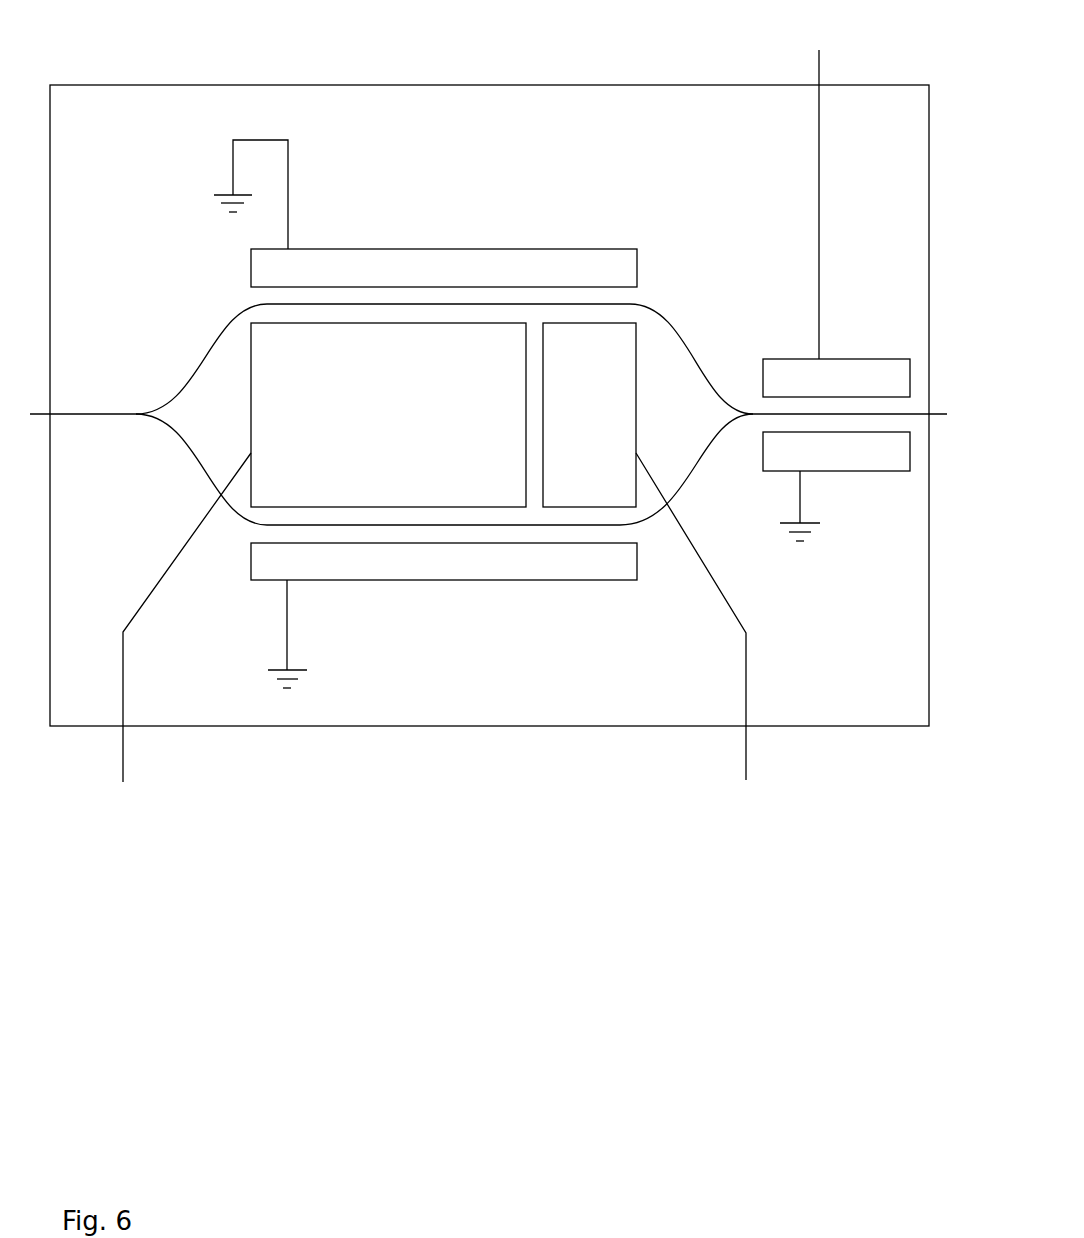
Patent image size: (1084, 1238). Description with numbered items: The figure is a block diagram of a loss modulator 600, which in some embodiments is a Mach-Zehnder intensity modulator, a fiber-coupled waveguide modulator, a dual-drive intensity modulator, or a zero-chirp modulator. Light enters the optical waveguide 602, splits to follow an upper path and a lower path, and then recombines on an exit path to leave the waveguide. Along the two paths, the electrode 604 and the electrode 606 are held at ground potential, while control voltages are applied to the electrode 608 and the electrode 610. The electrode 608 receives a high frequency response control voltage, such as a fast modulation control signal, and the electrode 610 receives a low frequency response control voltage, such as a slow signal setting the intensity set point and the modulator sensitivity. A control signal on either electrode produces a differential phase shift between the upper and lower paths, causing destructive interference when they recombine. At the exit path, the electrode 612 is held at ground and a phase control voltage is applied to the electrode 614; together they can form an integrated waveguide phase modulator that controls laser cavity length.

The loss modulator 600 is at (533, 726).
The optical waveguide 602 is at (118, 412).
The electrode 604 is at (519, 250).
The electrode 606 is at (500, 580).
The electrode 608 is at (251, 372).
The electrode 610 is at (637, 353).
The electrode 612 is at (882, 471).
The electrode 614 is at (882, 359).